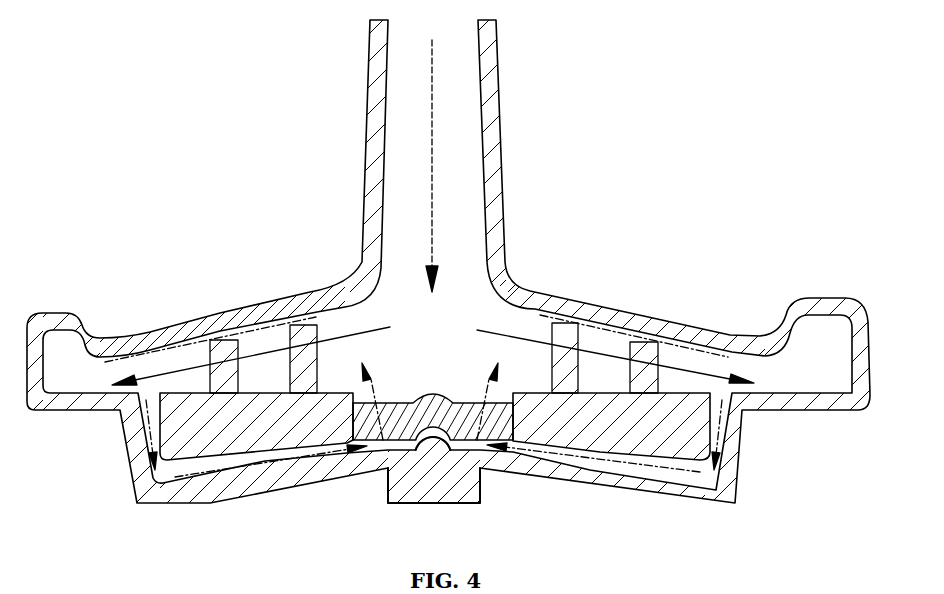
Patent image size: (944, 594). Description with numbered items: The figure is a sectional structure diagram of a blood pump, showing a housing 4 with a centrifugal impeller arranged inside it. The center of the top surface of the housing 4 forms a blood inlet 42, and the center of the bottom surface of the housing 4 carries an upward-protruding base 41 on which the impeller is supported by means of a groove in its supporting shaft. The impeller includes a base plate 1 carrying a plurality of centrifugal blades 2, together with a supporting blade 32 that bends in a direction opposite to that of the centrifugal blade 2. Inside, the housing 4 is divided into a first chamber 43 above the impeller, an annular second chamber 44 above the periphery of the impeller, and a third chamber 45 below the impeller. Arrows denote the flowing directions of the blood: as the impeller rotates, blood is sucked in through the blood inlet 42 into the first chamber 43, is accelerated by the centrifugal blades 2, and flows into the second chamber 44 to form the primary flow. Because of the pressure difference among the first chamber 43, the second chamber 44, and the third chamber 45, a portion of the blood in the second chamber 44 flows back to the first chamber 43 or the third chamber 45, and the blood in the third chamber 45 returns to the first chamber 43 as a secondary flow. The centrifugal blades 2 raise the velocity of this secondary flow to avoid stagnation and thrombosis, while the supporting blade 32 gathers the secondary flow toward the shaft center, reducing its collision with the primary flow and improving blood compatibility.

The base plate 1 is at (240, 427).
The centrifugal blade 2 is at (572, 345).
The housing 4 is at (743, 413).
The supporting blade 32 is at (503, 423).
The base 41 is at (443, 440).
The blood inlet 42 is at (458, 70).
The first chamber 43 is at (343, 353).
The second chamber 44 is at (812, 340).
The third chamber 45 is at (653, 473).